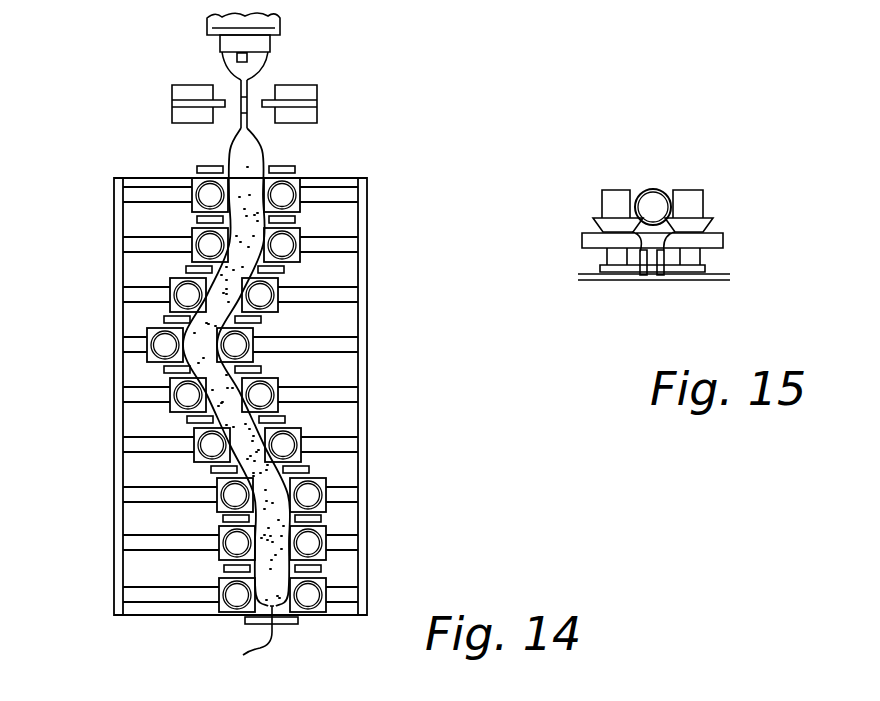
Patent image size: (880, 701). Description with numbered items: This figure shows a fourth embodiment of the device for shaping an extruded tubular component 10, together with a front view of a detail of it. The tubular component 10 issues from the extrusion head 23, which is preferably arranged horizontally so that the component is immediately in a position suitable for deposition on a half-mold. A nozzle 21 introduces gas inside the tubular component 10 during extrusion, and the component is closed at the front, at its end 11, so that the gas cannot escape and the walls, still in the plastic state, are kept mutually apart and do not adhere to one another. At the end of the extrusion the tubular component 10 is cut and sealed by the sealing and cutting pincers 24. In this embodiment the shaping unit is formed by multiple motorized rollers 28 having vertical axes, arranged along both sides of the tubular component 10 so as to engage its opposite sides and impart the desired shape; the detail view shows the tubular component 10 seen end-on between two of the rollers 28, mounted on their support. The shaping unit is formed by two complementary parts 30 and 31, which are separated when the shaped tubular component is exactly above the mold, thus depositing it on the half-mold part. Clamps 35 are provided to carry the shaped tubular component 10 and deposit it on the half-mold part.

In FIG. 14, the tubular component 10 is at (222, 402).
In FIG. 15, the tubular component 10 is at (655, 190).
In FIG. 14, the end 11 is at (250, 653).
In FIG. 14, the nozzle 21 is at (296, 21).
In FIG. 14, the extrusion head 23 is at (218, 42).
In FIG. 14, the sealing and cutting pincers 24 is at (180, 88).
In FIG. 14, the motorized rollers 28 is at (283, 193).
In FIG. 15, the motorized rollers 28 is at (610, 203).
In FIG. 14, the complementary part 30 is at (123, 542).
In FIG. 14, the complementary part 31 is at (367, 550).
In FIG. 14, the clamps 35 is at (165, 322).